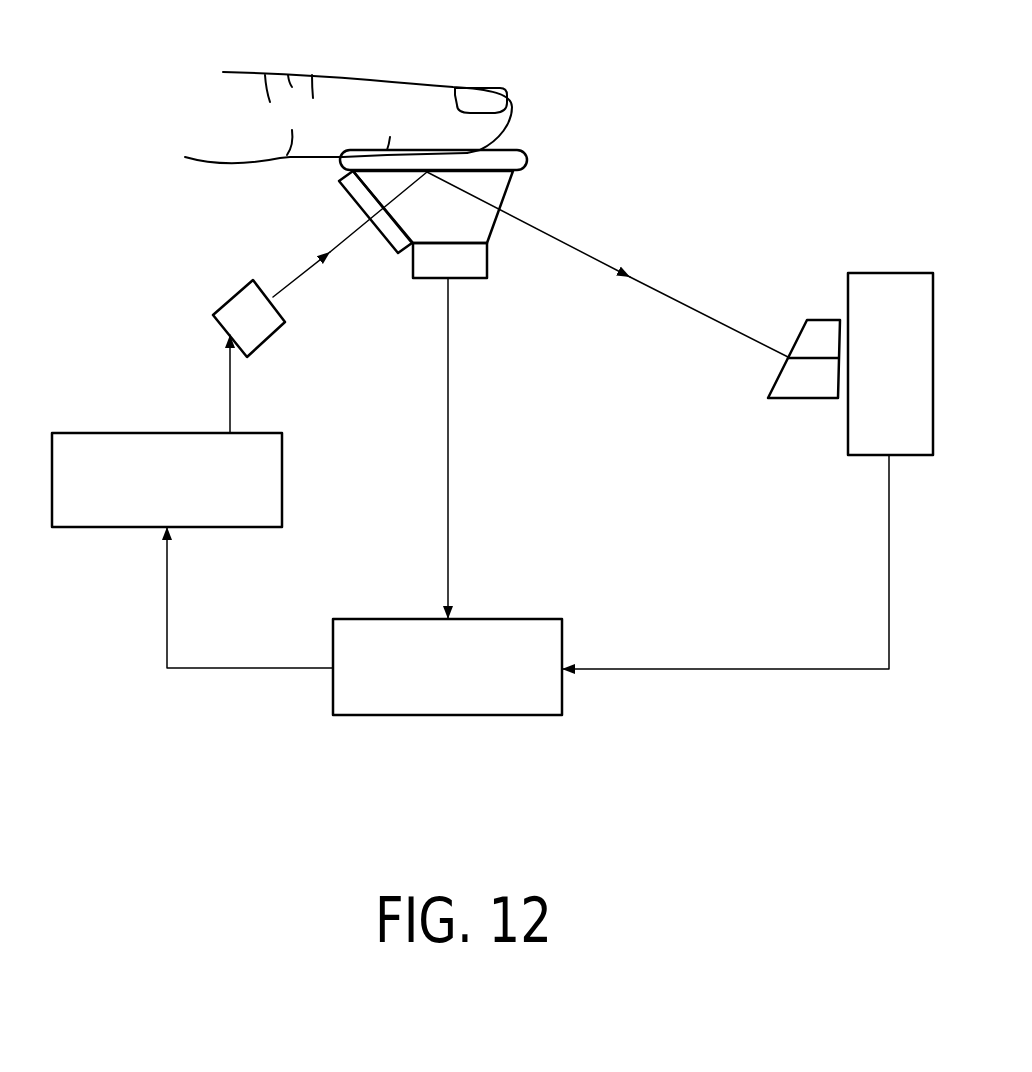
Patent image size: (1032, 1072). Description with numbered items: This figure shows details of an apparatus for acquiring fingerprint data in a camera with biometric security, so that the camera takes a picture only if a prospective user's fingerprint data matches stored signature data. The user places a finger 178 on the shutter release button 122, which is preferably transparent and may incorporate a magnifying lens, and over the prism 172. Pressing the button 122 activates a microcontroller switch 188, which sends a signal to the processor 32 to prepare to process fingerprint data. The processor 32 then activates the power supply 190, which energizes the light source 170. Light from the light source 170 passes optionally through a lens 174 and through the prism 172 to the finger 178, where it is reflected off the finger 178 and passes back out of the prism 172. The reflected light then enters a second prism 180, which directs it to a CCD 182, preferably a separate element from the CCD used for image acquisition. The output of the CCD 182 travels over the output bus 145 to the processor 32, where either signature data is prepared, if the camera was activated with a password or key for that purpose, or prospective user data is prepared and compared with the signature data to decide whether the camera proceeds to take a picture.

The finger 178 is at (512, 118).
The shutter release button 122 is at (527, 160).
The prism 172 is at (510, 185).
The lens 174 is at (341, 193).
The microcontroller switch 188 is at (470, 282).
The light source 170 is at (232, 300).
The second prism 180 is at (825, 317).
The CCD 182 is at (890, 273).
The output bus 145 is at (828, 669).
The power supply 190 is at (90, 433).
The processor 32 is at (448, 715).